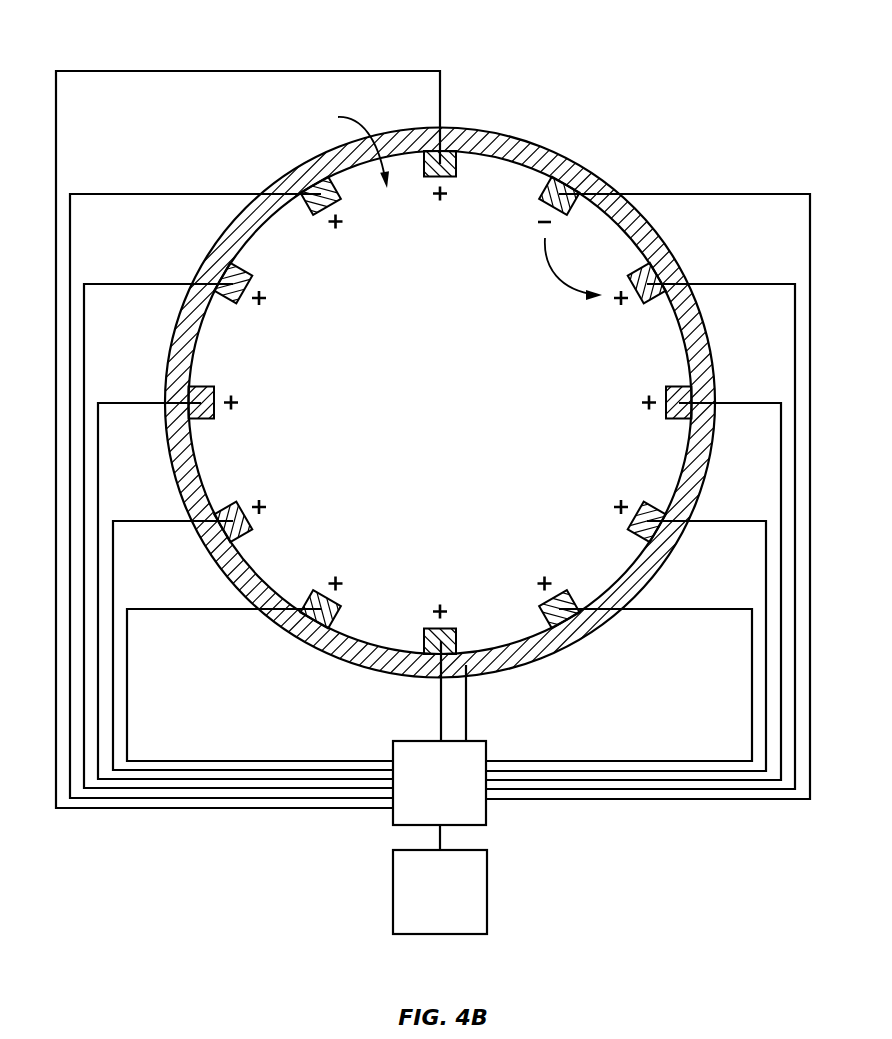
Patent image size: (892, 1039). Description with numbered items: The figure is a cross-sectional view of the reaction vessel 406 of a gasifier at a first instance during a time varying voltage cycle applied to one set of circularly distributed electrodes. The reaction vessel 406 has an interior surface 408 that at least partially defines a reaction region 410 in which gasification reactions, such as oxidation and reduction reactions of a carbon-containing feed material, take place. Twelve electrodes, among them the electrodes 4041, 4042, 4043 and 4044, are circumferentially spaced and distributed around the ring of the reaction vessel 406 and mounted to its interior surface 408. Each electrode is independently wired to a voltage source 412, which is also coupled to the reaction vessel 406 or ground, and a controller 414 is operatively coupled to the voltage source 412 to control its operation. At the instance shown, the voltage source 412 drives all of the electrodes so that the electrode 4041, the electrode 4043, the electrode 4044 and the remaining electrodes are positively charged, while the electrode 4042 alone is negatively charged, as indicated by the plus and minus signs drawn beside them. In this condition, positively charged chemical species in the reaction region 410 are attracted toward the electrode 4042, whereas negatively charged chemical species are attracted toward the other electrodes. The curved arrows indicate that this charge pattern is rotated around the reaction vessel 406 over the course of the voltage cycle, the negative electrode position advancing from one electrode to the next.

The electrode 4041 is at (466, 152).
The electrode 4042 is at (576, 229).
The electrode 4043 is at (649, 278).
The electrode 4044 is at (685, 389).
The reaction vessel 406 is at (513, 148).
The interior surface 408 is at (534, 180).
The reaction region 410 is at (347, 147).
The voltage source 412 is at (439, 783).
The controller 414 is at (440, 879).